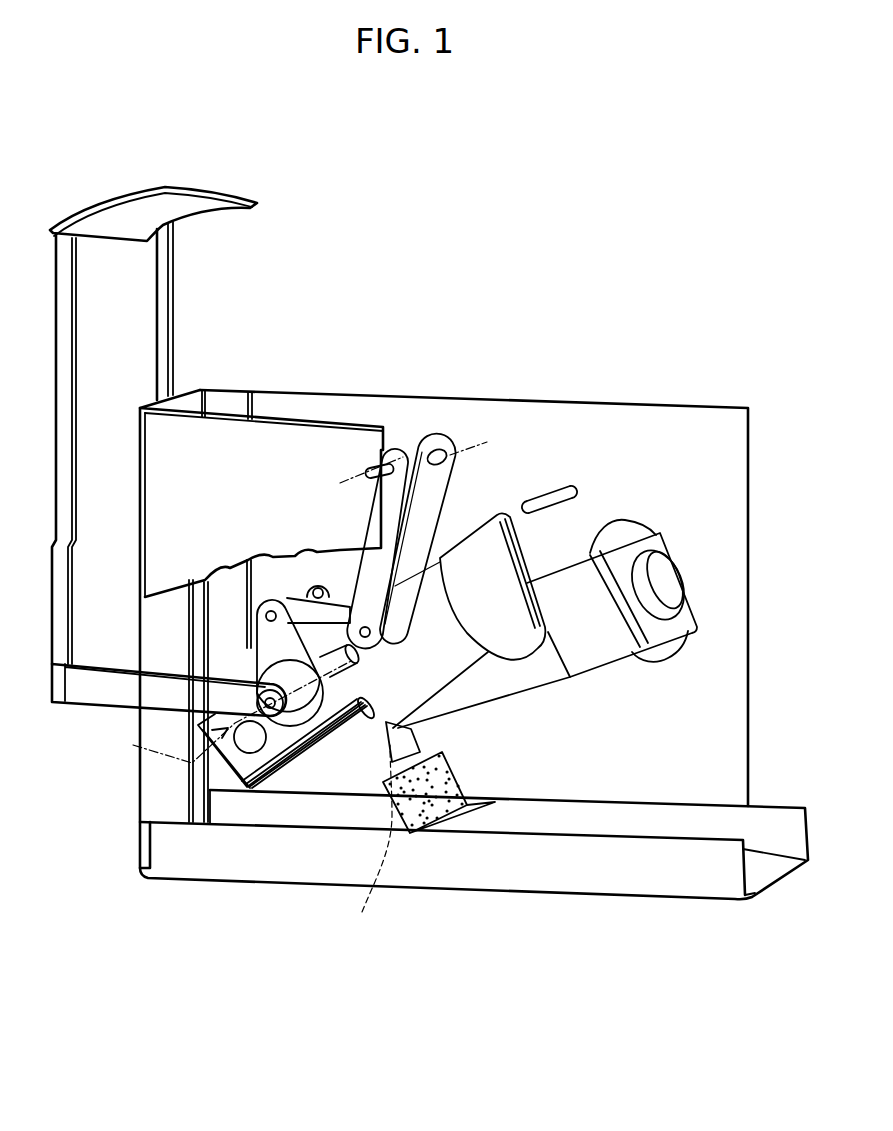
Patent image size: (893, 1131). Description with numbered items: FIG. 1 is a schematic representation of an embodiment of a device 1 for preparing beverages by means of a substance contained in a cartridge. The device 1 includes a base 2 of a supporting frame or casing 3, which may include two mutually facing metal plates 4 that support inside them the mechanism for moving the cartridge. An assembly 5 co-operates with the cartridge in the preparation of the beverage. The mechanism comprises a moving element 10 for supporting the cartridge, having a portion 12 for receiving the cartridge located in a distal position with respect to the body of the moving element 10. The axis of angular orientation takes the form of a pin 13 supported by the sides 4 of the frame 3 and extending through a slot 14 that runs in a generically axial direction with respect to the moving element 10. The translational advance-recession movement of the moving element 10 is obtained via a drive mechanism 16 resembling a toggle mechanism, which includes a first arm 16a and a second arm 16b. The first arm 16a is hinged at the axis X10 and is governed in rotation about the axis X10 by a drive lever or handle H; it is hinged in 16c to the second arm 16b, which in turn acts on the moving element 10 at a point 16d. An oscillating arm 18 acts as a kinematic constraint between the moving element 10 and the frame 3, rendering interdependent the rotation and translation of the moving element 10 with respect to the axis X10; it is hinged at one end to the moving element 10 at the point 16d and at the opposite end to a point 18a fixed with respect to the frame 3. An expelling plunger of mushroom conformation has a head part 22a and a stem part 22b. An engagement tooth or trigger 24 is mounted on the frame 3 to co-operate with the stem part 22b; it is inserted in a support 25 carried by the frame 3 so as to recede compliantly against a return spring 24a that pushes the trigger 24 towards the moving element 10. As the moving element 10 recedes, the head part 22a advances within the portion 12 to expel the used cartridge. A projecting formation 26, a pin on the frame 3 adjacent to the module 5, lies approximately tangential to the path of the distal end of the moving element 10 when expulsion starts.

The device for preparing beverages 1 is at (532, 309).
The drive lever or handle H is at (143, 302).
The base 2 is at (523, 875).
The supporting frame or casing 3 is at (225, 386).
The metal plates 4 is at (283, 423).
The assembly co-operating with the cartridge 5 is at (668, 573).
The moving element 10 is at (447, 665).
The portion for receiving the cartridge 12 is at (527, 643).
The pin 13 is at (293, 758).
The groove or slit or slot 14 is at (245, 713).
The drive mechanism 16 is at (267, 594).
The first arm 16a is at (280, 647).
The second arm 16b is at (333, 582).
The hinge point between first and second arms 16c is at (312, 588).
The point of action on the moving element 16d is at (362, 645).
The oscillating arm 18 is at (427, 527).
The axis of oscillation point 18a is at (373, 470).
The head part 22a is at (567, 537).
The stem part 22b is at (360, 727).
The engagement tooth or trigger 24 is at (443, 740).
The return spring 24a is at (359, 836).
The support 25 is at (457, 772).
The projecting formation 26 is at (552, 490).
The axis X10 is at (133, 745).